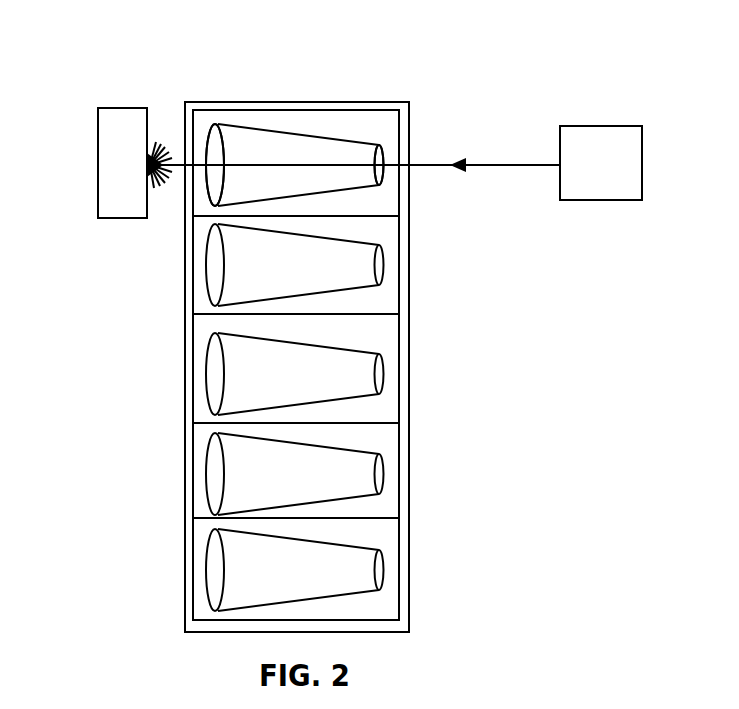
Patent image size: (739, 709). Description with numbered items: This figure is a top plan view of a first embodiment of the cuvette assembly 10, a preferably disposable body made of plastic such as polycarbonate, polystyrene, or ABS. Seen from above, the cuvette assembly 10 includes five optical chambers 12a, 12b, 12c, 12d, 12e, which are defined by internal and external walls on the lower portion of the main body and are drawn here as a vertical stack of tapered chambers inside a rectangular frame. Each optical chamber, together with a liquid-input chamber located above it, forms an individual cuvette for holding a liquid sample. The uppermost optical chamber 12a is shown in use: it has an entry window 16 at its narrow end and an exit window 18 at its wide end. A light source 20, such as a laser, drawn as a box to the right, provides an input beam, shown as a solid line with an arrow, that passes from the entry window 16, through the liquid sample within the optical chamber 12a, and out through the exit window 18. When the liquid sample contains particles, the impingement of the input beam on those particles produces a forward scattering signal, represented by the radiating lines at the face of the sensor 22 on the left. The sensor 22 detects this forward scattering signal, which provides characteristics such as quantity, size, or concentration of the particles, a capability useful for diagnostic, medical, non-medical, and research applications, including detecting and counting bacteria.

The cuvette assembly 10 is at (548, 66).
The optical chamber 12a is at (265, 153).
The optical chamber 12b is at (358, 255).
The optical chamber 12c is at (350, 368).
The optical chamber 12d is at (344, 480).
The optical chamber 12e is at (343, 575).
The entry window 16 is at (380, 146).
The exit window 18 is at (214, 126).
The light source 20 is at (625, 200).
The sensor 22 is at (97, 173).